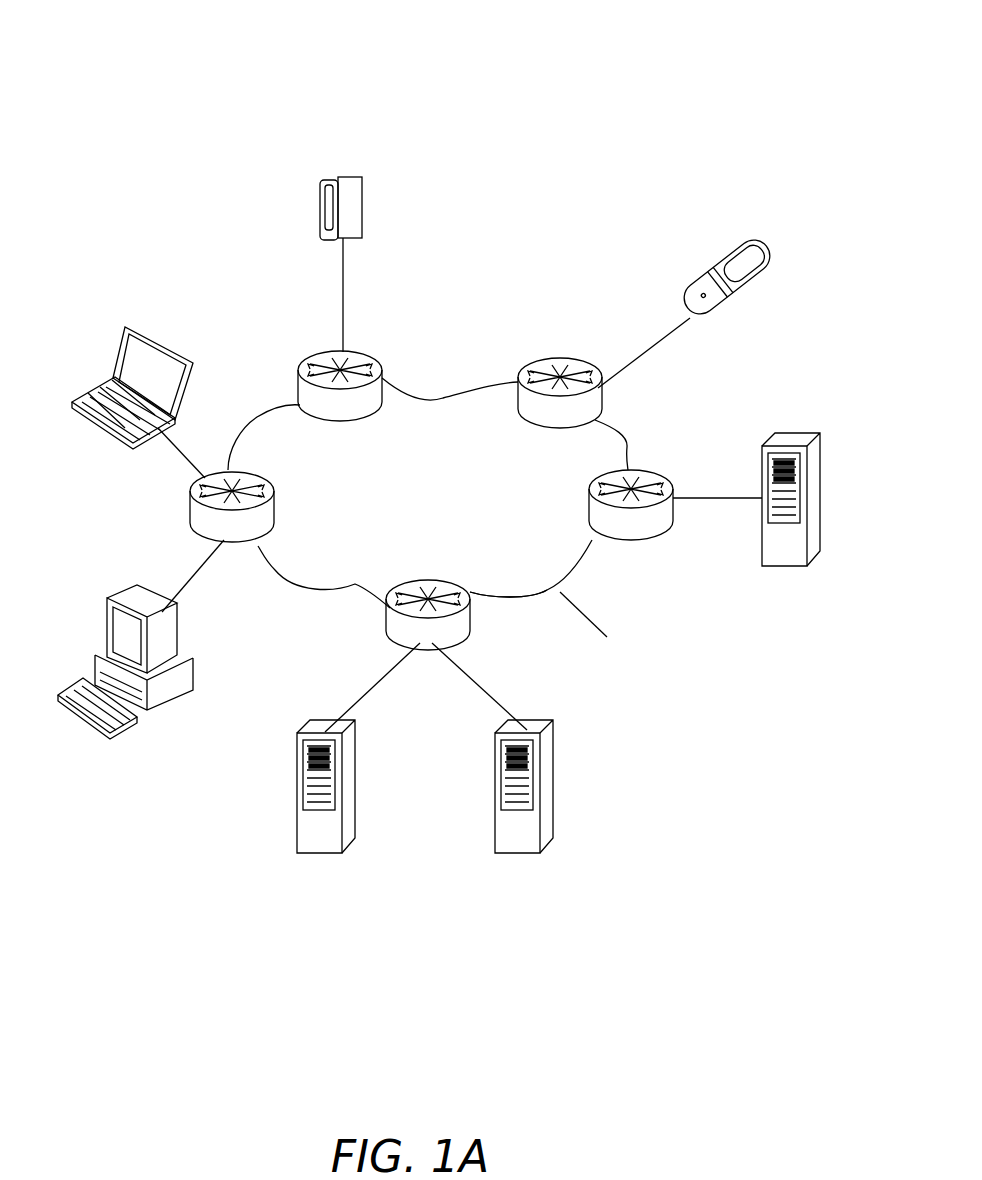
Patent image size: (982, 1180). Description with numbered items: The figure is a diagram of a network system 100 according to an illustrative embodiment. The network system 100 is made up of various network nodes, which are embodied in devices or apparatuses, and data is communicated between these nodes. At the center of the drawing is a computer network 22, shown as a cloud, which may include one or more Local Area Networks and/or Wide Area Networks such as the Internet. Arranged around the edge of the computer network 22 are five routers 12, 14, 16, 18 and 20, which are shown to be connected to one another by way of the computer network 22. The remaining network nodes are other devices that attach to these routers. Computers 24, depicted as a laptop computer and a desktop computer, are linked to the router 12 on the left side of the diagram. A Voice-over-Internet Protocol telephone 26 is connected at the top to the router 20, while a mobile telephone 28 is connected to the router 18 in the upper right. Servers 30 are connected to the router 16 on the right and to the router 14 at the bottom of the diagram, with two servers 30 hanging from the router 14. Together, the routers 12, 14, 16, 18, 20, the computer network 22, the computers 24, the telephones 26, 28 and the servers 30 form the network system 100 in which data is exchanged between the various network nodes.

The network system 100 is at (163, 85).
The router 12 is at (195, 494).
The router 14 is at (400, 640).
The router 16 is at (672, 527).
The router 18 is at (519, 378).
The router 20 is at (310, 353).
The computer network 22 is at (607, 637).
The computers 24 is at (78, 395).
The Voice-over-Internet Protocol (VoIP) telephone 26 is at (340, 178).
The mobile telephone 28 is at (712, 282).
The servers 30 is at (763, 446).